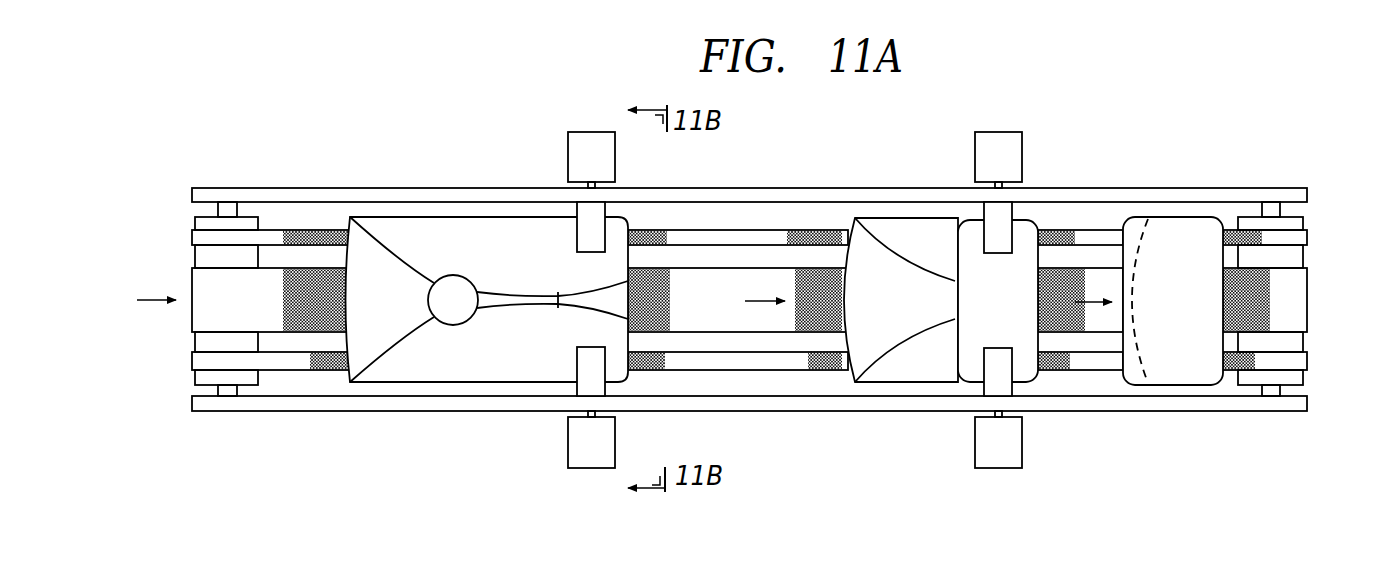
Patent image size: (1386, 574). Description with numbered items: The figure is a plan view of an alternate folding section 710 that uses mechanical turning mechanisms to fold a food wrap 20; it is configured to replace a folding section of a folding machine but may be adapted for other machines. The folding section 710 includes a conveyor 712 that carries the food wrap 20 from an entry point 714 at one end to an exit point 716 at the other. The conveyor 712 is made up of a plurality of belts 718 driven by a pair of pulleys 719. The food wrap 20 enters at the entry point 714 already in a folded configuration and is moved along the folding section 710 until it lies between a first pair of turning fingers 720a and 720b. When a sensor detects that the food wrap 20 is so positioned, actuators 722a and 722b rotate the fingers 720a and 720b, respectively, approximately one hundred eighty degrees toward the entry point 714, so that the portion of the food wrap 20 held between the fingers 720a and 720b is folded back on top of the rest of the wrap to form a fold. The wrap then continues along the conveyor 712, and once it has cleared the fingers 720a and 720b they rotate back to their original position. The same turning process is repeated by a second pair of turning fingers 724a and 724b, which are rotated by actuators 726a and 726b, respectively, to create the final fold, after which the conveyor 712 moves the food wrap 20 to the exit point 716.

The food wrap 20 is at (447, 249).
The folding section 710 is at (327, 446).
The conveyor 712 is at (782, 450).
The entry point 714 is at (124, 201).
The exit point 716 is at (1349, 450).
The belts 718 is at (192, 356).
The pulleys 719 is at (192, 255).
The turning finger 720a is at (577, 358).
The turning finger 720b is at (577, 243).
The actuator 722a is at (568, 450).
The actuator 722b is at (582, 132).
The turning finger 724a is at (983, 393).
The turning finger 724b is at (1014, 206).
The actuator 726a is at (1022, 450).
The actuator 726b is at (1010, 132).